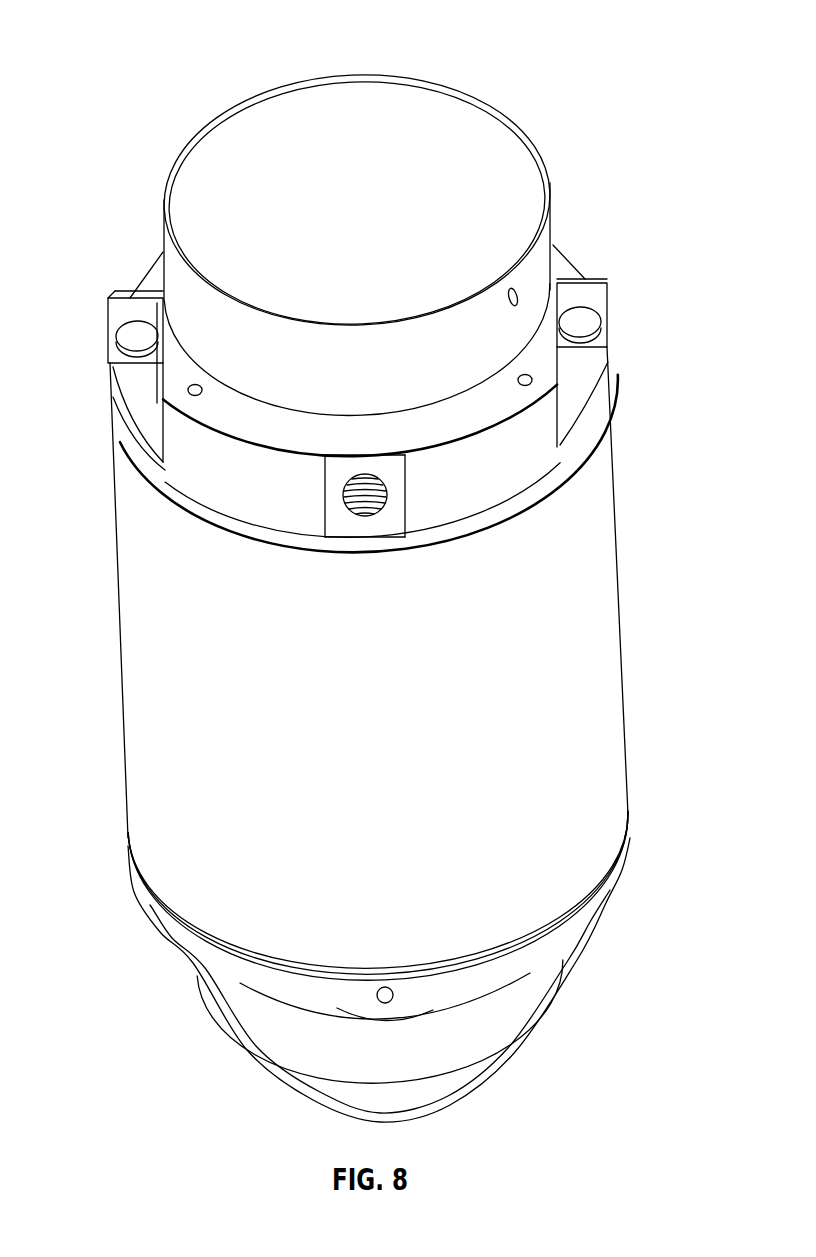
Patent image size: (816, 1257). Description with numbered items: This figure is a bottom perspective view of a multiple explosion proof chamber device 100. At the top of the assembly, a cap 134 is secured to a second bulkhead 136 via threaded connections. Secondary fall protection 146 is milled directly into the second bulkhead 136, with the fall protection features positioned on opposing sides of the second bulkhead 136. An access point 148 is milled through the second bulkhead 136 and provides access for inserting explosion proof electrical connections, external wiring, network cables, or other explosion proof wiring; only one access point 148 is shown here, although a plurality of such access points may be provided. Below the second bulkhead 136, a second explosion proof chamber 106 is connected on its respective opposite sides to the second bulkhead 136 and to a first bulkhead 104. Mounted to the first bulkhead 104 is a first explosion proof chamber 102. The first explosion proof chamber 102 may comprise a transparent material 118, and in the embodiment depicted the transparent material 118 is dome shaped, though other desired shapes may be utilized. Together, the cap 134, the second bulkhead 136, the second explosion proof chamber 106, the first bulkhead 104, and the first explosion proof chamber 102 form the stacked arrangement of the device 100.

The multiple explosion proof chamber device 100 is at (120, 58).
The first explosion proof chamber 102 is at (447, 1043).
The first bulkhead 104 is at (150, 903).
The second explosion proof chamber 106 is at (553, 658).
The transparent material 118 is at (557, 1000).
The cap 134 is at (297, 103).
The second bulkhead 136 is at (523, 470).
The secondary fall protection 146 is at (122, 337).
The access point 148 is at (363, 497).